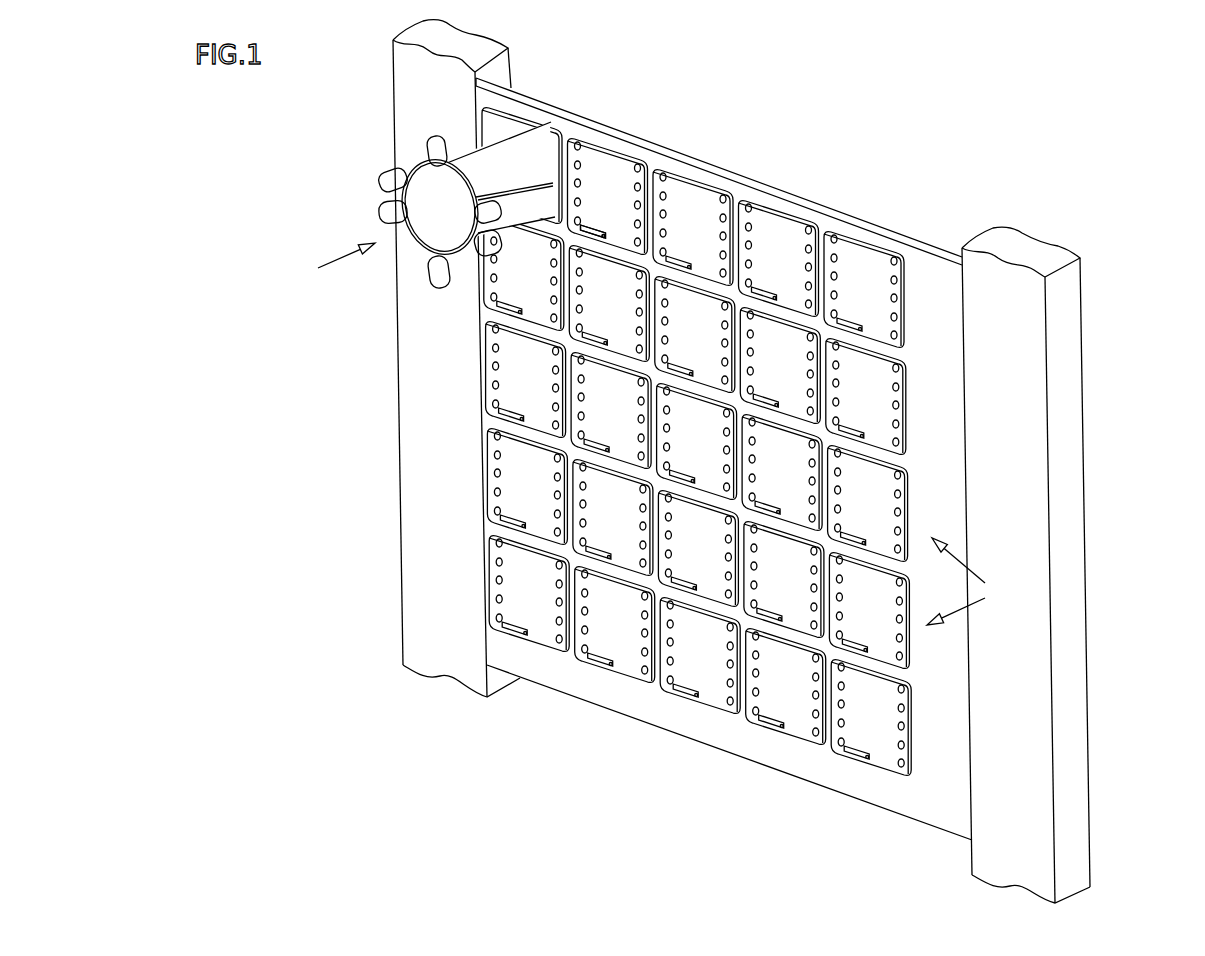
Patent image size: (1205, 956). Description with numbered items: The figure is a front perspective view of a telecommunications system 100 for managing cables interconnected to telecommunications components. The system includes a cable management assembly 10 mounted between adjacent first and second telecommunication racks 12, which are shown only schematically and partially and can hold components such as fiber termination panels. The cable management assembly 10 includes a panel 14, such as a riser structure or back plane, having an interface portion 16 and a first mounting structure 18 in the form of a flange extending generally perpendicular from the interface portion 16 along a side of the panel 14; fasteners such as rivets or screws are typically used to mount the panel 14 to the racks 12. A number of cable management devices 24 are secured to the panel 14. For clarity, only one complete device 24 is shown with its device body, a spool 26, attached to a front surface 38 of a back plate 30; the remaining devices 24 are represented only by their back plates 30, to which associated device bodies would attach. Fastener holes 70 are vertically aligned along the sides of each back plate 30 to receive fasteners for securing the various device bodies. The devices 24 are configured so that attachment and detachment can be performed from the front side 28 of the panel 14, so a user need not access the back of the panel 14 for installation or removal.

The cable management assembly 10 is at (853, 124).
The telecommunication rack 12 is at (1063, 311).
The panel 14 is at (591, 705).
The interface portion 16 is at (775, 748).
The first mounting structure 18 is at (492, 80).
The cable management device 24 is at (648, 434).
The spool 26 is at (467, 147).
The front side 28 is at (690, 718).
The back plate 30 is at (548, 128).
The front surface 38 is at (707, 231).
The fastener holes 70 is at (579, 165).
The telecommunications system 100 is at (289, 190).